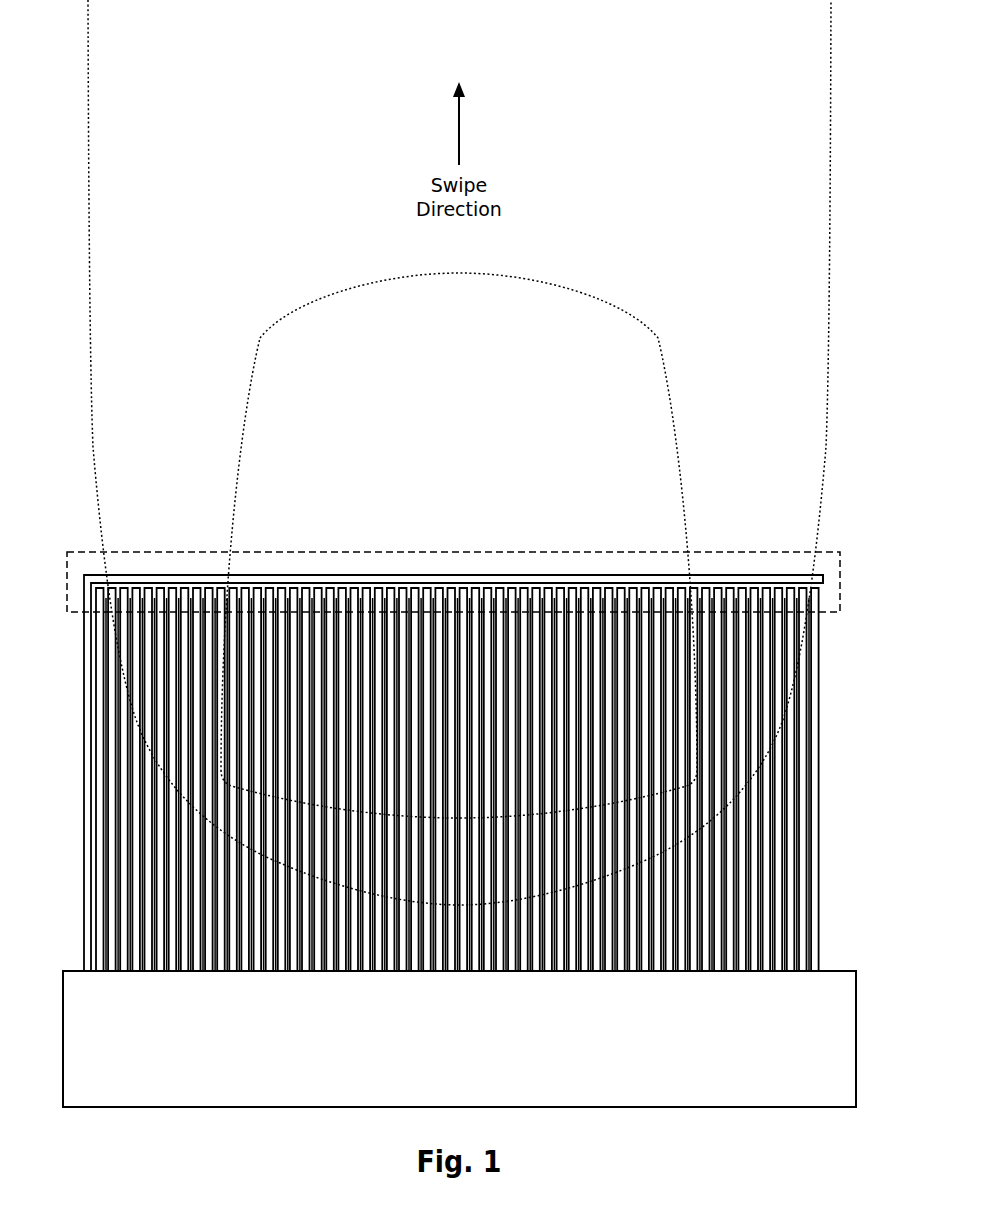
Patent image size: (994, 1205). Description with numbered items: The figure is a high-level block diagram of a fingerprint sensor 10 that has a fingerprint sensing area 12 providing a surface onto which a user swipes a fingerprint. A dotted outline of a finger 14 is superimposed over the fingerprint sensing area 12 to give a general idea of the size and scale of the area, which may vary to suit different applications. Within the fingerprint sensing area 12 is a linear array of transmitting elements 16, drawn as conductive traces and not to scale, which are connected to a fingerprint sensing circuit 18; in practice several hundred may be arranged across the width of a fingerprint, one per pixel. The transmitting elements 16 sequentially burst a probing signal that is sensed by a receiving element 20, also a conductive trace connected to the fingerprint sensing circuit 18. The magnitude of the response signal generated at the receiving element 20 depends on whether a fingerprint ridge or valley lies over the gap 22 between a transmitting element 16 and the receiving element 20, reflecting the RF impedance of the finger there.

The fingerprint sensor 10 is at (176, 488).
The fingerprint sensing area 12 is at (552, 548).
The finger 14 is at (826, 495).
The transmitting elements 16 is at (322, 592).
The fingerprint sensing circuit 18 is at (809, 1009).
The receiving element 20 is at (345, 583).
The gap 22 is at (826, 583).